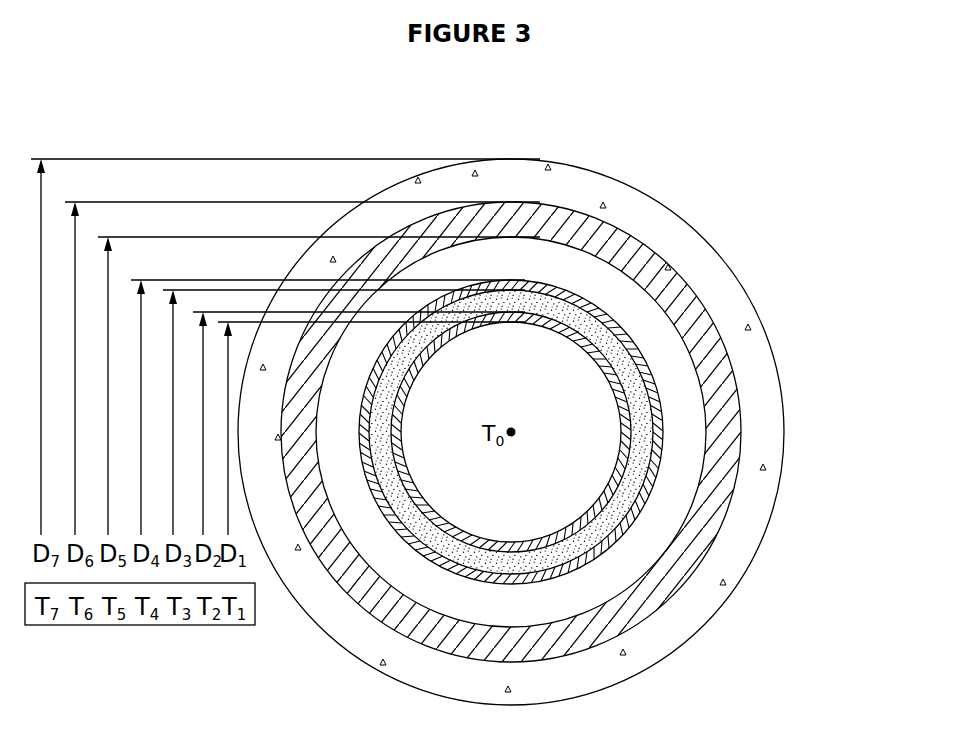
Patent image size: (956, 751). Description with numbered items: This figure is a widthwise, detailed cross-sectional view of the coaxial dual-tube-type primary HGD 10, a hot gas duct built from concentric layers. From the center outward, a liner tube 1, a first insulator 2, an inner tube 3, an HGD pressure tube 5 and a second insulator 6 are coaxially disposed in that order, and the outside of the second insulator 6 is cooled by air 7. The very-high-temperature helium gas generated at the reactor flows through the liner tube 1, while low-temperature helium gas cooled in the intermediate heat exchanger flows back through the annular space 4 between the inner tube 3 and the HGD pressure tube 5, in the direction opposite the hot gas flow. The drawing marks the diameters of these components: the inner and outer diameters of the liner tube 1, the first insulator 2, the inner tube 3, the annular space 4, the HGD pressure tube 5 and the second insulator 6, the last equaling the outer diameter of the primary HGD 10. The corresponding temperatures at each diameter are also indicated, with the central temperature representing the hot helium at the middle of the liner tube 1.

The coaxial dual-tube-type primary HGD 10 is at (600, 136).
The liner tube 1 is at (603, 497).
The first insulator 2 is at (640, 455).
The inner tube 3 is at (665, 425).
The annular space 4 is at (675, 380).
The HGD pressure tube 5 is at (687, 312).
The second insulator 6 is at (685, 252).
The air 7 is at (663, 198).